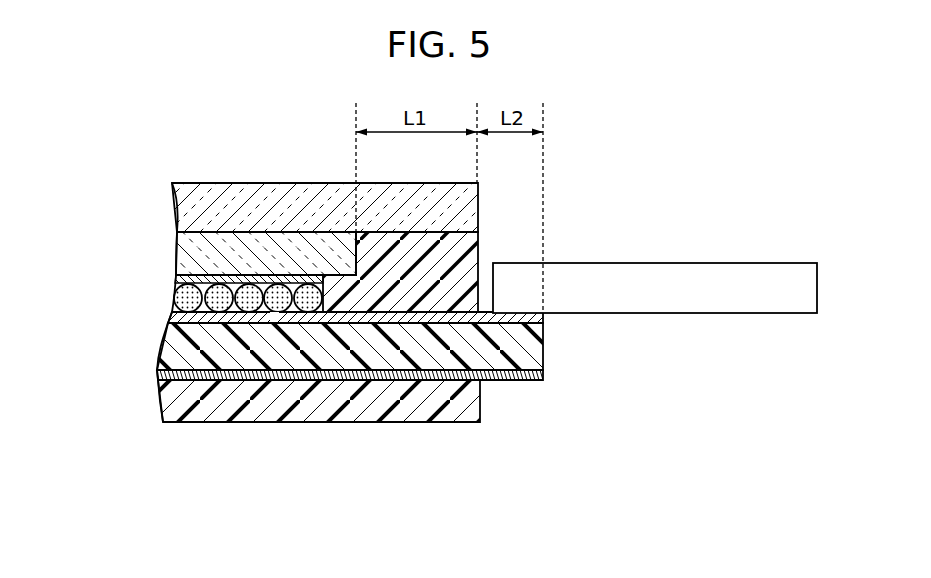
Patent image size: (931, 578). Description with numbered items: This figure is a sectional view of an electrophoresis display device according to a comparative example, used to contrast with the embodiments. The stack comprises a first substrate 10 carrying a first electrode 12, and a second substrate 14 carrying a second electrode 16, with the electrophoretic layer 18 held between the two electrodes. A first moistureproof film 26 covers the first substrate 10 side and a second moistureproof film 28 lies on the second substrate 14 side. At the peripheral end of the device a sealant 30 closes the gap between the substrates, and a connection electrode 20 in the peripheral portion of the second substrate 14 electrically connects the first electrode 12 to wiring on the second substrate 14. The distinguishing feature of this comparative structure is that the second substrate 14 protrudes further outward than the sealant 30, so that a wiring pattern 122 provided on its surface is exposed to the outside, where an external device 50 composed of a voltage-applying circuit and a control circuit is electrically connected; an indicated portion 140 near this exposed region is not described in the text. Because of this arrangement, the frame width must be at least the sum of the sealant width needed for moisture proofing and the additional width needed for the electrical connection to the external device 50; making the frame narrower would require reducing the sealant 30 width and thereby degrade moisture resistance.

The first moistureproof film 26 is at (175, 203).
The first substrate 10 is at (175, 256).
The first electrode 12 is at (173, 282).
The electrophoretic layer 18 is at (174, 297).
The second electrode 16 is at (168, 323).
The second substrate 14 is at (170, 338).
The second moistureproof film 28 is at (162, 407).
The wiring pattern 122 is at (310, 372).
The connection electrode 20 is at (347, 303).
The sealant 30 is at (418, 292).
The wiring portion 140 is at (508, 397).
The external device 50 is at (775, 270).